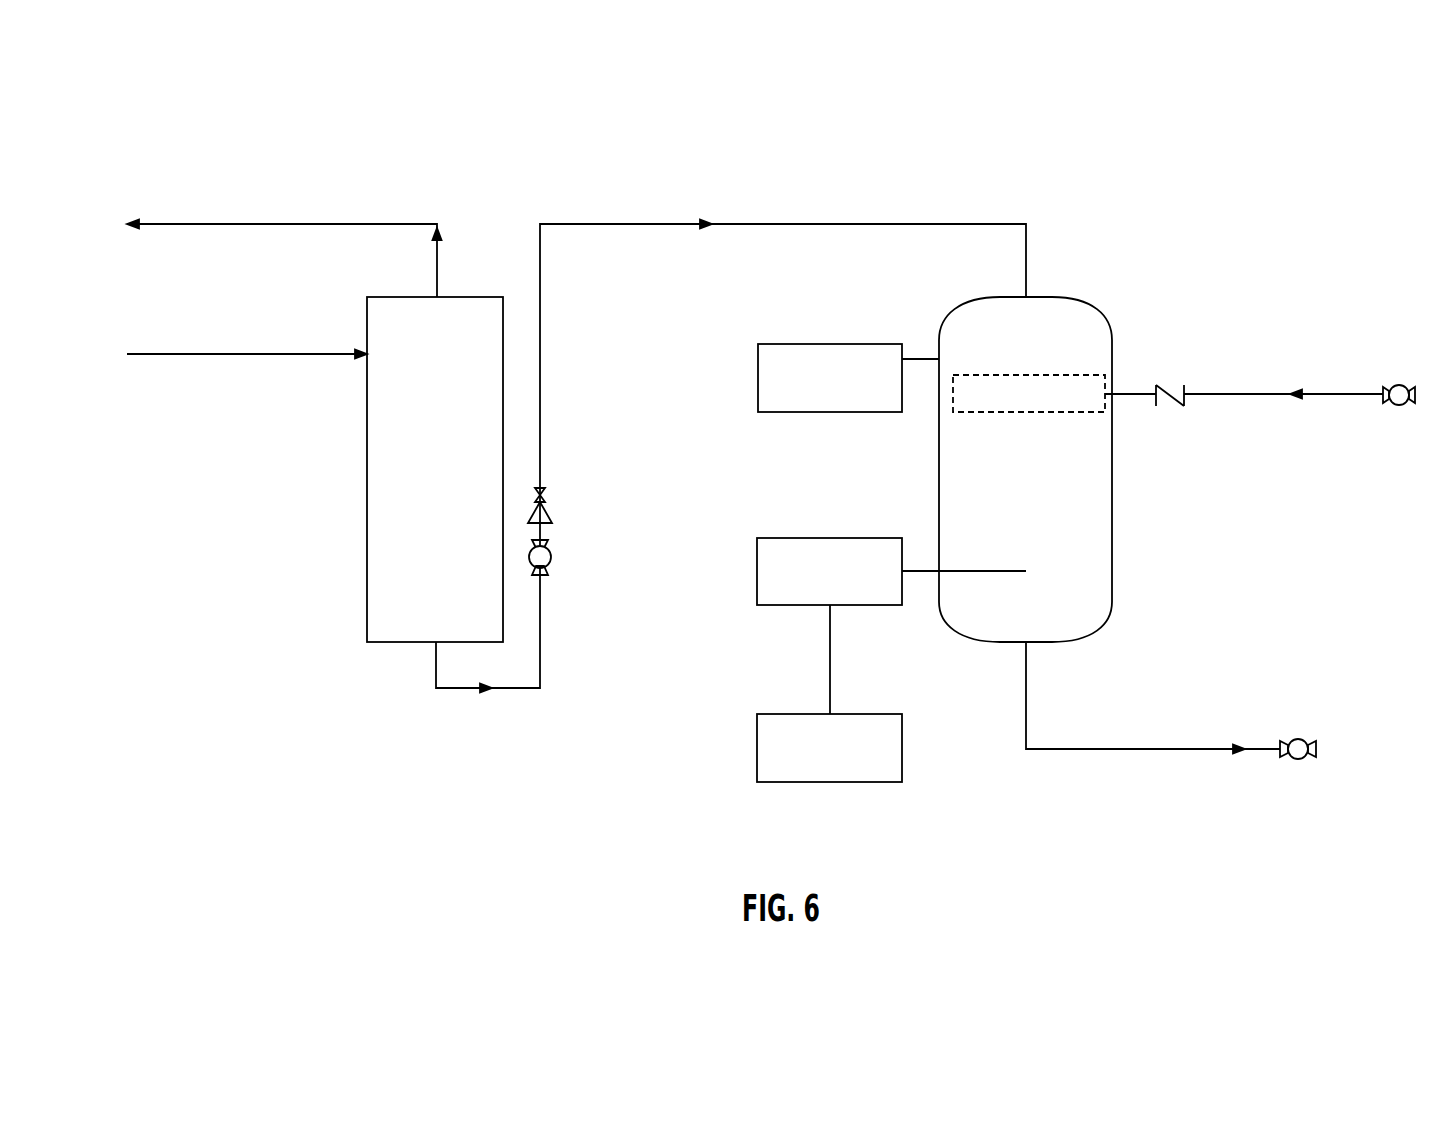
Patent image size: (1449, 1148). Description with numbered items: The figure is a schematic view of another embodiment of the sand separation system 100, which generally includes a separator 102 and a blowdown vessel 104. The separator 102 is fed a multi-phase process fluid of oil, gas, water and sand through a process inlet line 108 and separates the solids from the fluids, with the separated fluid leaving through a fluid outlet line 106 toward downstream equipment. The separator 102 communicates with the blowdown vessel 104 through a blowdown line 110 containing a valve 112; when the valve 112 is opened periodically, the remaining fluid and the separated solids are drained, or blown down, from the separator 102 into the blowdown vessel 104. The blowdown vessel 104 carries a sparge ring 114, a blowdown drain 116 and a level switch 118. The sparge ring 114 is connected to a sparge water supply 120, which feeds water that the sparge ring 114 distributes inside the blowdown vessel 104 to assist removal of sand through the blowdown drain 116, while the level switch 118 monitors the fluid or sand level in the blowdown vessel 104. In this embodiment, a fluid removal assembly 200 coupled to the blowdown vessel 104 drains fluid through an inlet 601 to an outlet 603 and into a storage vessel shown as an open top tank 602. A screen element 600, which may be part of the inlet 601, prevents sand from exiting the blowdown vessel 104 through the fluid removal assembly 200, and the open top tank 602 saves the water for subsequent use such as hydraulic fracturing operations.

The sand separation system 100 is at (183, 113).
The separator 102 is at (458, 296).
The blowdown vessel 104 is at (1068, 300).
The fluid outlet line 106 is at (355, 224).
The process inlet line 108 is at (205, 357).
The blowdown line 110 is at (628, 224).
The valve 112 is at (552, 557).
The sparge ring 114 is at (1055, 418).
The blowdown drain 116 is at (1100, 749).
The level switch 118 is at (830, 343).
The sparge water supply 120 is at (1400, 405).
The fluid removal assembly 200 is at (740, 668).
The screen element 600 is at (828, 538).
The inlet 601 is at (1003, 571).
The open top tank 602 is at (830, 782).
The outlet 603 is at (830, 712).